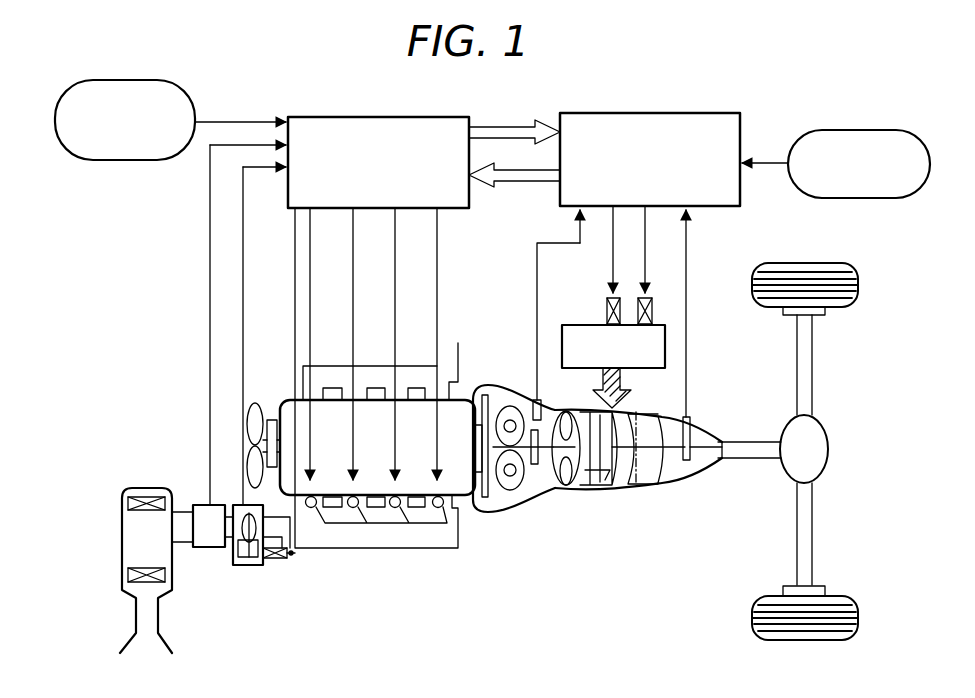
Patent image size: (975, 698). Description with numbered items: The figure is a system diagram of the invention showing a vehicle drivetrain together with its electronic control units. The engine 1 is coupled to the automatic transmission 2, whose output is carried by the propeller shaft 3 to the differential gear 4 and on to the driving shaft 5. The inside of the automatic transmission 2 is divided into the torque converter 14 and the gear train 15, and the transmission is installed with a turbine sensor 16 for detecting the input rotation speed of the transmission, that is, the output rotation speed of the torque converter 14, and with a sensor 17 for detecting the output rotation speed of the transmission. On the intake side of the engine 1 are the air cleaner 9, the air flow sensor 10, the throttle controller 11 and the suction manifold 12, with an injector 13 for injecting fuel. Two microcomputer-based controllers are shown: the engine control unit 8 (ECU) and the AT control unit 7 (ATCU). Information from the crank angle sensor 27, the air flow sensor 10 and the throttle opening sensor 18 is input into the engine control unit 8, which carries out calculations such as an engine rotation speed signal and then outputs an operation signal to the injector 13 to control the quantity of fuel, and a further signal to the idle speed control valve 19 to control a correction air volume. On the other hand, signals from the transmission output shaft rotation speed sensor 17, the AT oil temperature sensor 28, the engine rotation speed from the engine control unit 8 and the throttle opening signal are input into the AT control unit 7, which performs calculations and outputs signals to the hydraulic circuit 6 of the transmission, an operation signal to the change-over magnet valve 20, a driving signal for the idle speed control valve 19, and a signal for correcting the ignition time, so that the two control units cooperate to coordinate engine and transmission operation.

The engine 1 is at (465, 500).
The automatic transmission 2 is at (555, 490).
The propeller shaft 3 is at (761, 460).
The differential gear 4 is at (823, 458).
The driving shaft 5 is at (851, 271).
The hydraulic circuit of AT 6 is at (666, 350).
The AT control unit 7 is at (695, 114).
The engine control unit 8 is at (437, 118).
The air cleaner 9 is at (147, 488).
The air flow sensor 10 is at (208, 548).
The throttle controller 11 is at (250, 566).
The suction manifold 12 is at (385, 549).
The injector 13 is at (315, 497).
The torque converter 14 is at (523, 492).
The gear train 15 is at (639, 486).
The turbine sensor 16 is at (534, 406).
The transmission output shaft rotation speed sensor 17 is at (691, 420).
The throttle opening sensor 18 is at (247, 511).
The idle speed control valve 19 is at (274, 559).
The change-over magnet valve 20 is at (607, 309).
The crank angle sensor 27 is at (194, 106).
The AT oil temperature sensor 28 is at (884, 131).